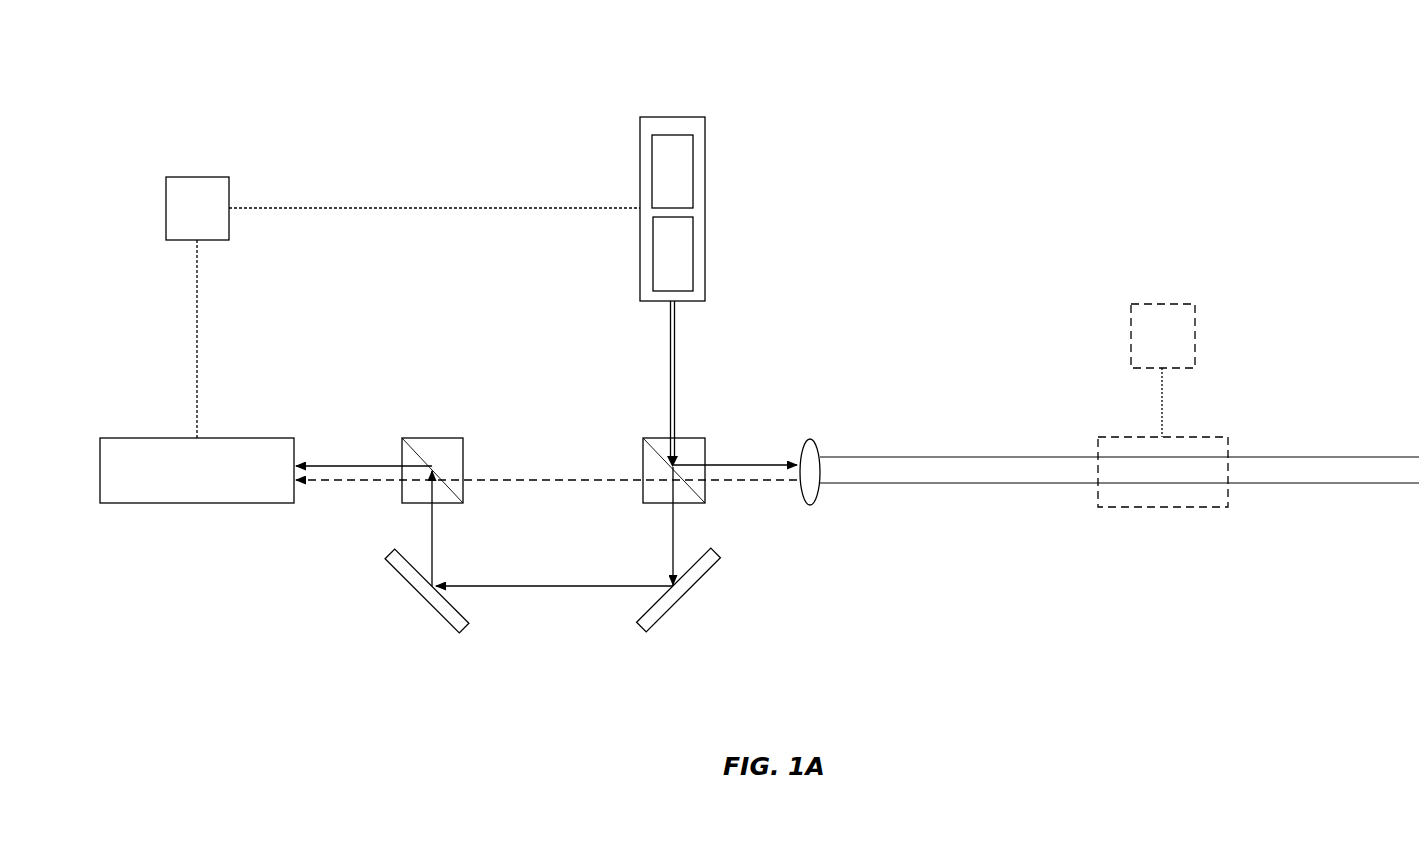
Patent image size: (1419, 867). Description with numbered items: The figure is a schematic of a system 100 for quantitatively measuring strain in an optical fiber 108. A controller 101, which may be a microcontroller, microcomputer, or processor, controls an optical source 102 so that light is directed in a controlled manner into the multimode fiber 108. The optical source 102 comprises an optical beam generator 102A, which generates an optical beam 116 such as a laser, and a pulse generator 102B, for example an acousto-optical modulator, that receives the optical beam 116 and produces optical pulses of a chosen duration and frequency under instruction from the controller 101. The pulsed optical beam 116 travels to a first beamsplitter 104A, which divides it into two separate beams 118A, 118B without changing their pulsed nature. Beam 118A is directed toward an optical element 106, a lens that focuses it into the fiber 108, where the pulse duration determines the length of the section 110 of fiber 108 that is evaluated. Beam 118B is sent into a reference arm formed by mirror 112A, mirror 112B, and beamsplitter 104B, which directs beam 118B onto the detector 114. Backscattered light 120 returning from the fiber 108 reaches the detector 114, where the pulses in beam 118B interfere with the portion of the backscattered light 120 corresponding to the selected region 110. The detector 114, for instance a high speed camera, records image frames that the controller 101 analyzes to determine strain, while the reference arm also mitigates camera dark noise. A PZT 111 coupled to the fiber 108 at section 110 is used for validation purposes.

The system 100 is at (197, 49).
The controller 101 is at (196, 171).
The optical source 102 is at (712, 193).
The optical beam generator 102A is at (672, 133).
The pulse generator 102B is at (650, 253).
The first beamsplitter 104A is at (694, 435).
The beamsplitter 104B is at (433, 434).
The optical element 106 is at (824, 447).
The optical fiber 108 is at (1031, 451).
The section 110 is at (1171, 515).
The PZT 111 is at (1161, 293).
The mirror 112A is at (699, 592).
The mirror 112B is at (416, 598).
The detector 114 is at (134, 431).
The optical beam 116 is at (664, 344).
The beam 118A is at (760, 459).
The beam 118B is at (596, 571).
The backscattered light 120 is at (609, 474).